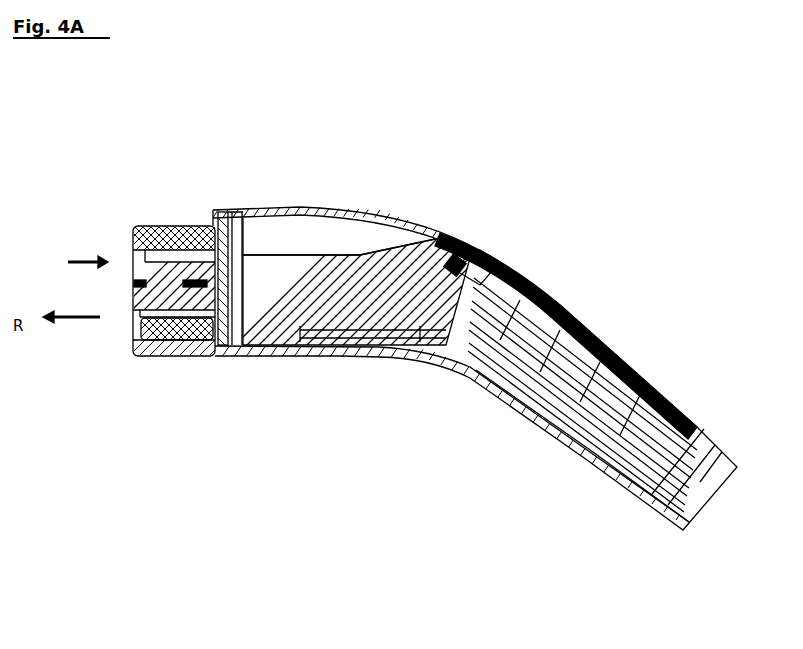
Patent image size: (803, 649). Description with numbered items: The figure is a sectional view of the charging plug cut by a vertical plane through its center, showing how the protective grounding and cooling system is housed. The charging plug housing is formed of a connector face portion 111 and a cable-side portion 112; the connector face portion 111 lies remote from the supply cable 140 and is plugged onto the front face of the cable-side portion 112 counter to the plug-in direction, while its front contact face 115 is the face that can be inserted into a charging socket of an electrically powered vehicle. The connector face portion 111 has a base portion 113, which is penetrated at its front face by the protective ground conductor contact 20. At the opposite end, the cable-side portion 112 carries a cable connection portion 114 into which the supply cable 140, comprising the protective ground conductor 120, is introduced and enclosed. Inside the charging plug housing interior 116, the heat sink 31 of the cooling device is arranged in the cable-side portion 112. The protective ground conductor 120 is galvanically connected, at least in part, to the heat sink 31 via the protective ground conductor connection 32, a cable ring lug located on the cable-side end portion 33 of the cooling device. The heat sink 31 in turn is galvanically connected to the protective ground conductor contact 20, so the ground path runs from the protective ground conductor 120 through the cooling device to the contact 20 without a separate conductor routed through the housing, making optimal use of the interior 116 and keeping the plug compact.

The protective ground conductor contact 20 is at (170, 333).
The heat sink 31 is at (350, 292).
The protective ground conductor connection 32 is at (475, 265).
The cable-side end portion 33 is at (431, 321).
The connector face portion 111 is at (200, 353).
The cable-side portion 112 is at (362, 357).
The base portion 113 is at (226, 273).
The cable connection portion 114 is at (587, 460).
The front contact face 115 is at (63, 260).
The charging plug housing interior 116 is at (309, 236).
The protective ground conductor 120 is at (537, 300).
The supply cable 140 is at (707, 440).